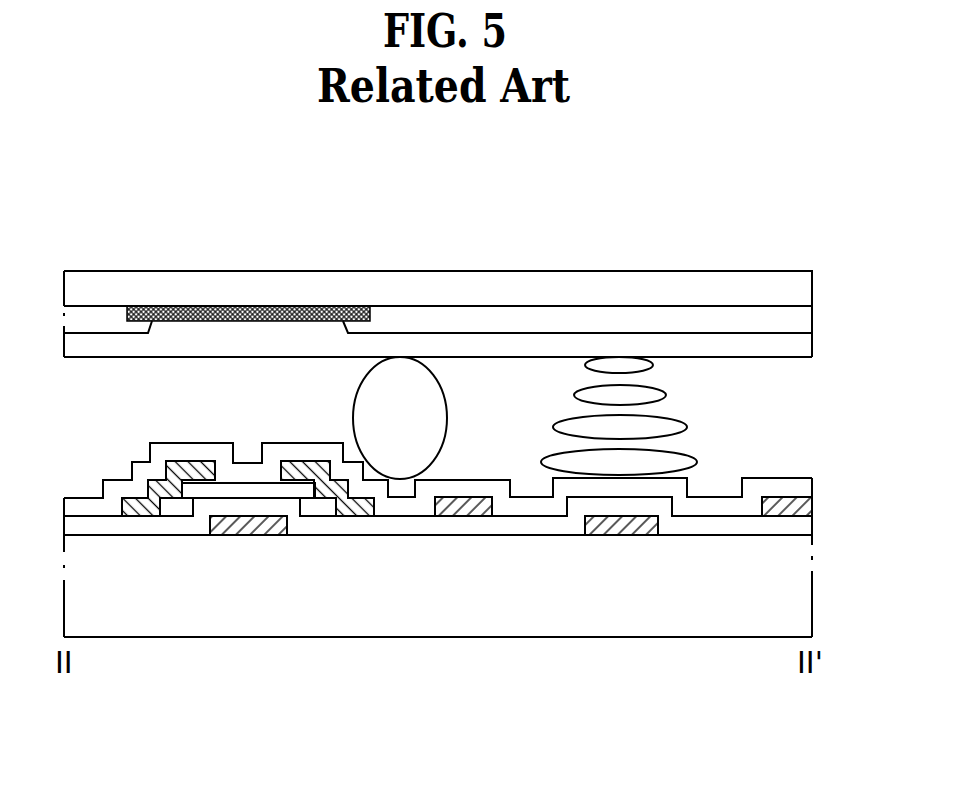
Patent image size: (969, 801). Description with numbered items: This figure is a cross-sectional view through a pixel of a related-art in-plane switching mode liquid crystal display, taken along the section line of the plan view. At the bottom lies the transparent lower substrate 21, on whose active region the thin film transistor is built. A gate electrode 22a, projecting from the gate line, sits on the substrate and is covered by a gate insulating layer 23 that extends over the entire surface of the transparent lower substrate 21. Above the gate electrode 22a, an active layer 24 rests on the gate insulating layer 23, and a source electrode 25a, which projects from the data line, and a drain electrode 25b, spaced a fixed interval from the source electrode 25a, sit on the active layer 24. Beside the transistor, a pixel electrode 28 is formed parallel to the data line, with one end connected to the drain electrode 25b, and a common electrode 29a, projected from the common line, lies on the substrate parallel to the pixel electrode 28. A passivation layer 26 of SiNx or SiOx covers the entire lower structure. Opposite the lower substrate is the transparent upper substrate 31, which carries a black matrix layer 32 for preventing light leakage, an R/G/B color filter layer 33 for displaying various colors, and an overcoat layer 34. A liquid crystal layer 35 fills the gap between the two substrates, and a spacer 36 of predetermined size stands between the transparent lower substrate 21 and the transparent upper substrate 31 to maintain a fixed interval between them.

The transparent lower substrate 21 is at (805, 592).
The gate electrode 22a is at (256, 537).
The gate insulating layer 23 is at (805, 529).
The active layer 24 is at (205, 485).
The source electrode 25a is at (163, 470).
The drain electrode 25b is at (300, 467).
The passivation layer 26 is at (805, 492).
The pixel electrode 28 is at (465, 497).
The common electrode 29a is at (622, 537).
The transparent upper substrate 31 is at (806, 288).
The black matrix layer 32 is at (305, 305).
The R/G/B color filter layer 33 is at (806, 318).
The overcoat layer 34 is at (806, 348).
The liquid crystal layer 35 is at (665, 428).
The spacer 36 is at (428, 390).